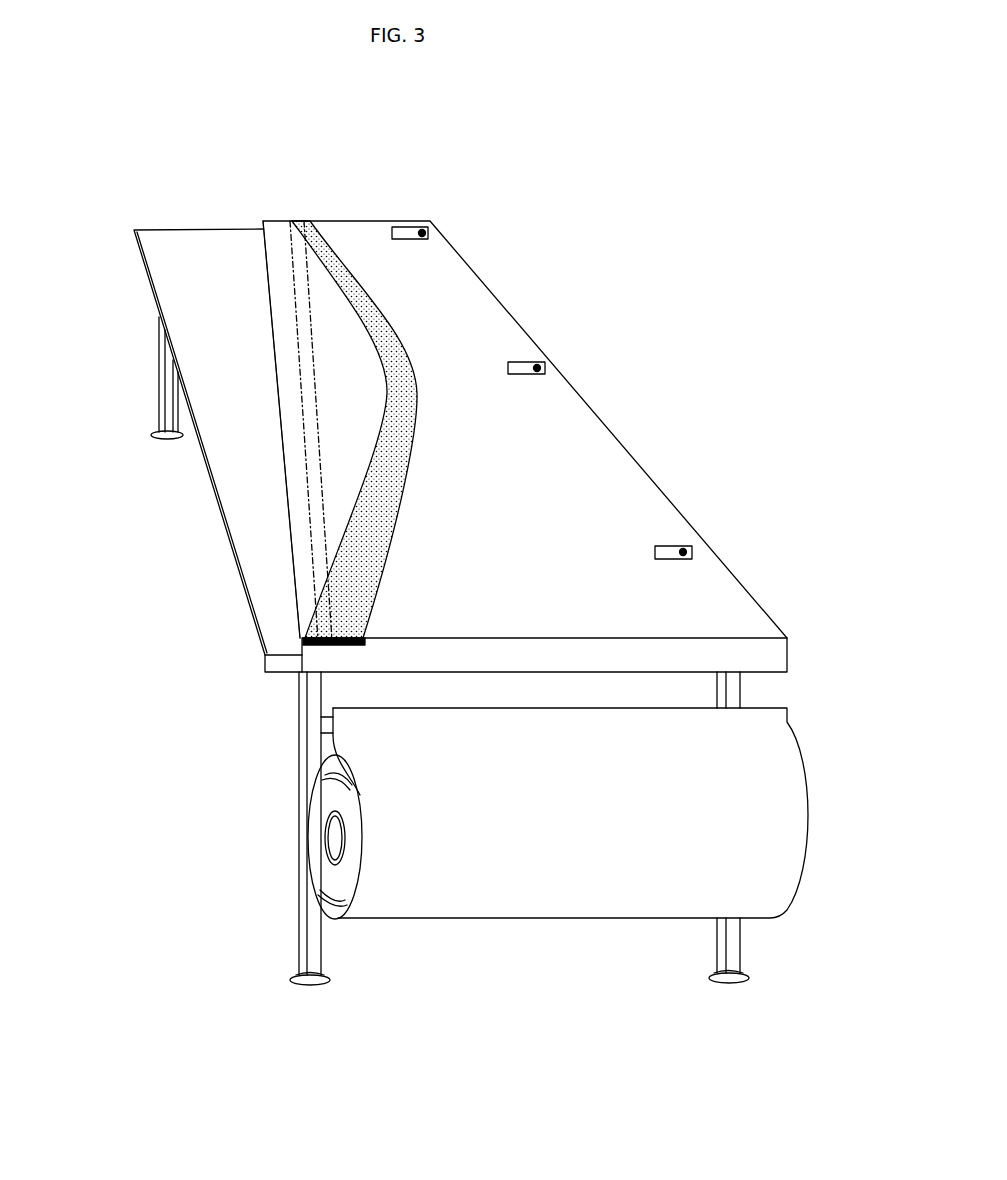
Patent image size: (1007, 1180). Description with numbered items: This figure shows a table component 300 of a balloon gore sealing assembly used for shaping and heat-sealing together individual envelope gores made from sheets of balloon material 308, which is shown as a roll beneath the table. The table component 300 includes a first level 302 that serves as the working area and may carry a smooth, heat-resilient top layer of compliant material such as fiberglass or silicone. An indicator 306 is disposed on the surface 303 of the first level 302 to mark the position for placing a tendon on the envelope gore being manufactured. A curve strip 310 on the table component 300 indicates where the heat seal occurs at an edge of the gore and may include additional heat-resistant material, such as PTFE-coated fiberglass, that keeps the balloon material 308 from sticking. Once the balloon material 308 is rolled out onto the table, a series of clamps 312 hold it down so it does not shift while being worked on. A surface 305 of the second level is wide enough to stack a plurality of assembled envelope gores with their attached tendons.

The table component 300 is at (763, 45).
The first level 302 is at (360, 207).
The surface 303 is at (191, 217).
The surface 305 is at (236, 377).
The indicator 306 is at (294, 458).
The balloon material 308 is at (457, 807).
The curve strip 310 is at (404, 505).
The clamps 312 is at (543, 346).